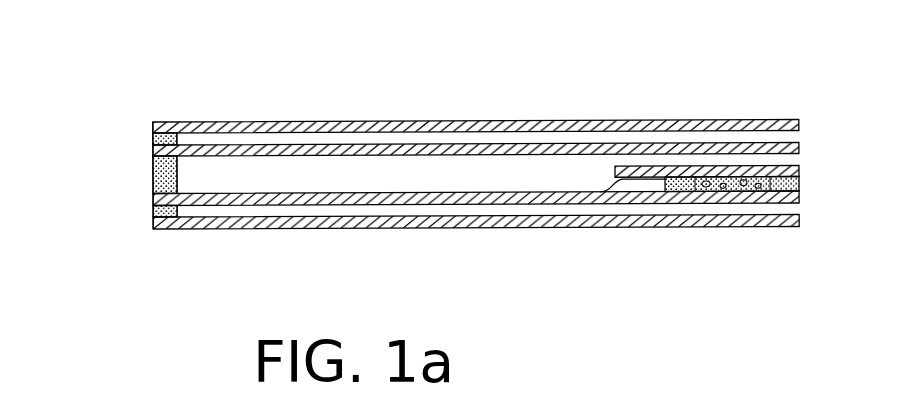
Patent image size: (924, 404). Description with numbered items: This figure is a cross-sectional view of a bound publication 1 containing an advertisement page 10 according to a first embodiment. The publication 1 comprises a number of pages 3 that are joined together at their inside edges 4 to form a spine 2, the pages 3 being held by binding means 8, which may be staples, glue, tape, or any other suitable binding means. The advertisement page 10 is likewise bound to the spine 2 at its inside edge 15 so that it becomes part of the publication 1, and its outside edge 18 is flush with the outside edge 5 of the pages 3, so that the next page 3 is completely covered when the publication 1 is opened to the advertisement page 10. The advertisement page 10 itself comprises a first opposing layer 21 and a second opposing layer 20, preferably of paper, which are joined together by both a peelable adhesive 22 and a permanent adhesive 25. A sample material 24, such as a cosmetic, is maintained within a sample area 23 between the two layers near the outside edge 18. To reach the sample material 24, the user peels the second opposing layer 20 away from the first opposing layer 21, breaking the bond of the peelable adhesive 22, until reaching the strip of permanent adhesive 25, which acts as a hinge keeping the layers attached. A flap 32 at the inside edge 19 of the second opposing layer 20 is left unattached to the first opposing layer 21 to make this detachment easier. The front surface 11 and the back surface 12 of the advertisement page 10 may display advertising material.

The publication 1 is at (404, 95).
The spine 2 is at (72, 122).
The pages 3 is at (706, 146).
The inside edges 4 is at (153, 124).
The outside edge 5 is at (800, 126).
The binding means 8 is at (153, 138).
The advertisement page 10 is at (626, 211).
The front surface 11 is at (325, 191).
The back surface 12 is at (418, 204).
The inside edge 15 is at (153, 198).
The outside edge 18 is at (800, 196).
The inside edge 19 is at (615, 173).
The second opposing layer 20 is at (653, 186).
The first opposing layer 21 is at (505, 201).
The peelable adhesive 22 is at (677, 185).
The sample area 23 is at (800, 174).
The sample material 24 is at (748, 186).
The permanent adhesive 25 is at (800, 186).
The flap 32 is at (625, 201).